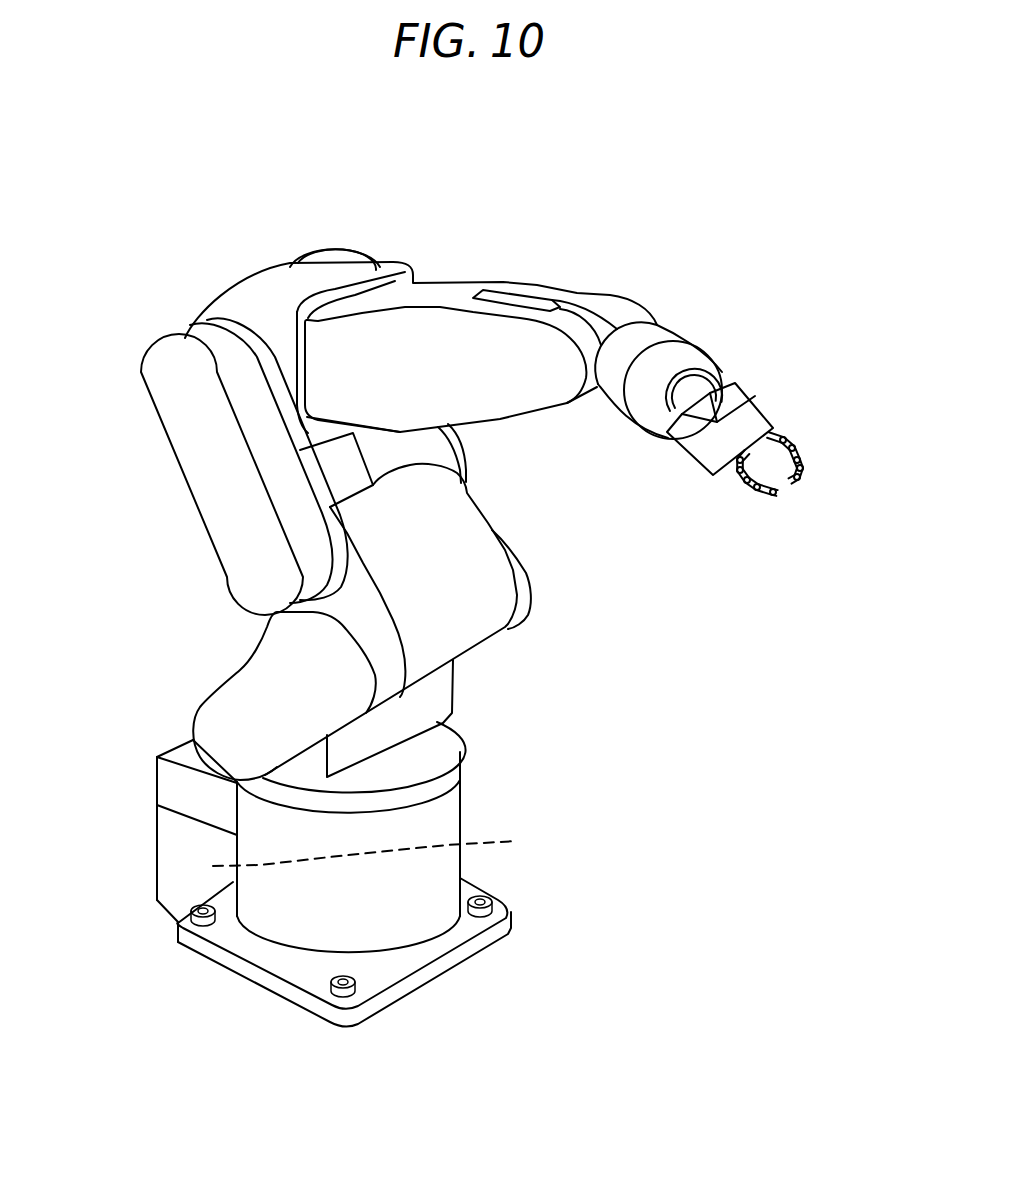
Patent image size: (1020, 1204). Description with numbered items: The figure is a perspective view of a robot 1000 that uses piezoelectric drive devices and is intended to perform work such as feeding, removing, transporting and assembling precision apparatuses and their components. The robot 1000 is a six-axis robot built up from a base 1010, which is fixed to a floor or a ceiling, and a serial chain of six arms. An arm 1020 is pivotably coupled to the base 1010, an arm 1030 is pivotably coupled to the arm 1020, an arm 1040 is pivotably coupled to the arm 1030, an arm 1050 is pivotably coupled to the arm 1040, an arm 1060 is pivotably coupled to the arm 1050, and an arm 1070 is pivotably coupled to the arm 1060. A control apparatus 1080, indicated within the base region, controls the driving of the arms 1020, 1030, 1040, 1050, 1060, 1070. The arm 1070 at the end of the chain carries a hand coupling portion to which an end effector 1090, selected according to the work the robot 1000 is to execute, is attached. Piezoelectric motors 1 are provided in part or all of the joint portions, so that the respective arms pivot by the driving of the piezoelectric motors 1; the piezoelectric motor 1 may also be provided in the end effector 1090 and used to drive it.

The robot 1000 is at (541, 226).
The base 1010 is at (297, 892).
The arm 1020 is at (215, 720).
The arm 1030 is at (415, 609).
The arm 1040 is at (230, 307).
The arm 1050 is at (428, 330).
The arm 1060 is at (652, 338).
The arm 1070 is at (635, 403).
The control apparatus 1080 is at (395, 847).
The end effector 1090 is at (773, 492).
The piezoelectric motor 1 is at (427, 635).